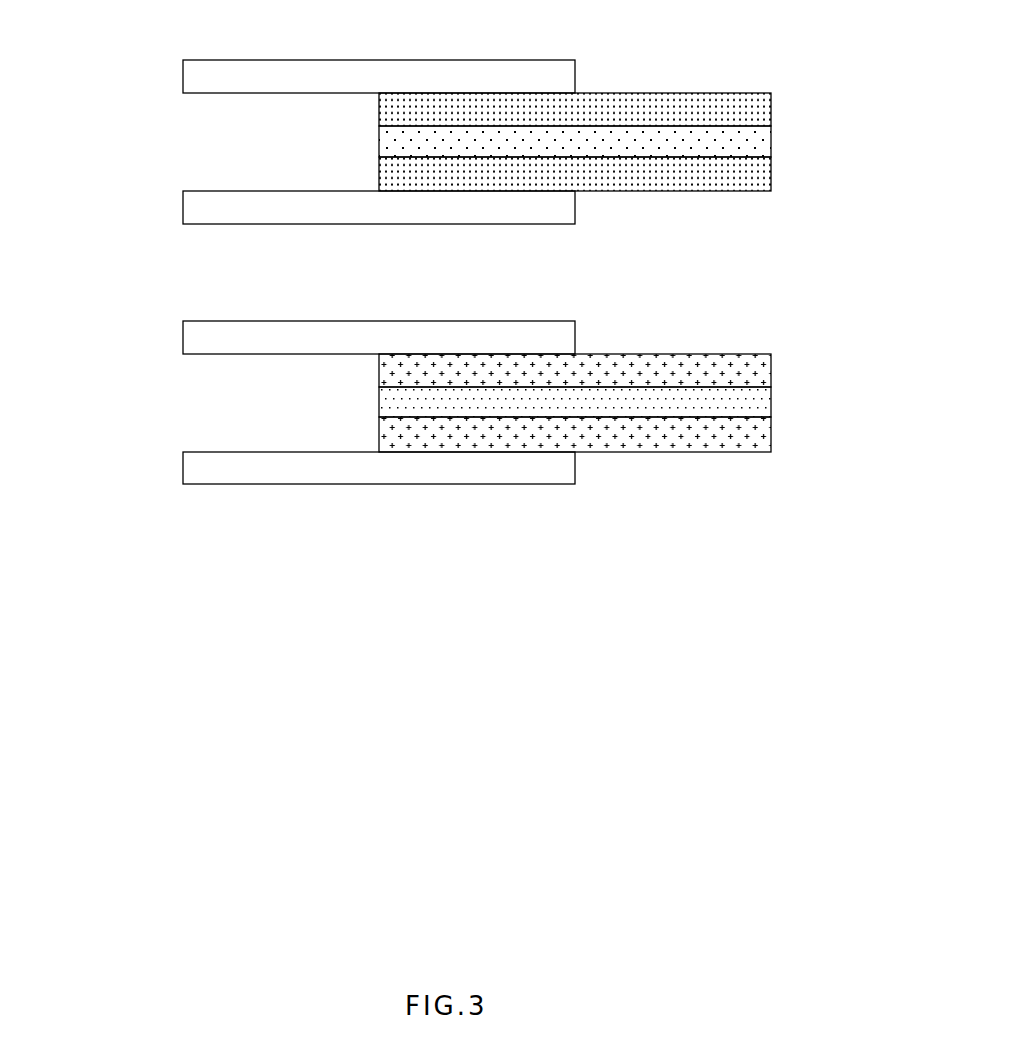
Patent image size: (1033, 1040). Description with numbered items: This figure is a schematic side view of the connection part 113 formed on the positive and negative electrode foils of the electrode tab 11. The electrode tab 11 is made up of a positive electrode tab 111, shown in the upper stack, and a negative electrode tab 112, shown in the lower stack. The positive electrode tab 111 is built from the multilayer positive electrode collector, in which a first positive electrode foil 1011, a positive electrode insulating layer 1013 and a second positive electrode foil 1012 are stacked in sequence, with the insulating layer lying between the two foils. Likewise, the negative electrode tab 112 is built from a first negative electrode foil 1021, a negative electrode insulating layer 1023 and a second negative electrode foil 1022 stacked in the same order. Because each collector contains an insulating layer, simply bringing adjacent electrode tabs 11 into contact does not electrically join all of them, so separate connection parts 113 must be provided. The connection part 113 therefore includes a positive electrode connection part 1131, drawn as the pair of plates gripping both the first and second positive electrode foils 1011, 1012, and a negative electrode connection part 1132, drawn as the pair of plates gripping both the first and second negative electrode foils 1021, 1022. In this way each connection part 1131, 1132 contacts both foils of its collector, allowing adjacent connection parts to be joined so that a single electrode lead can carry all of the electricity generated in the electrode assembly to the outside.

The electrode tab 11 is at (616, 315).
The positive electrode tab 111 is at (616, 97).
The negative electrode tab 112 is at (616, 358).
The connection part 113 is at (301, 272).
The positive electrode connection part 1131 is at (167, 75).
The negative electrode connection part 1132 is at (334, 402).
The first positive electrode foil 1011 is at (771, 107).
The second positive electrode foil 1012 is at (771, 173).
The positive electrode insulating layer 1013 is at (771, 140).
The first negative electrode foil 1021 is at (771, 368).
The second negative electrode foil 1022 is at (771, 433).
The negative electrode insulating layer 1023 is at (771, 400).